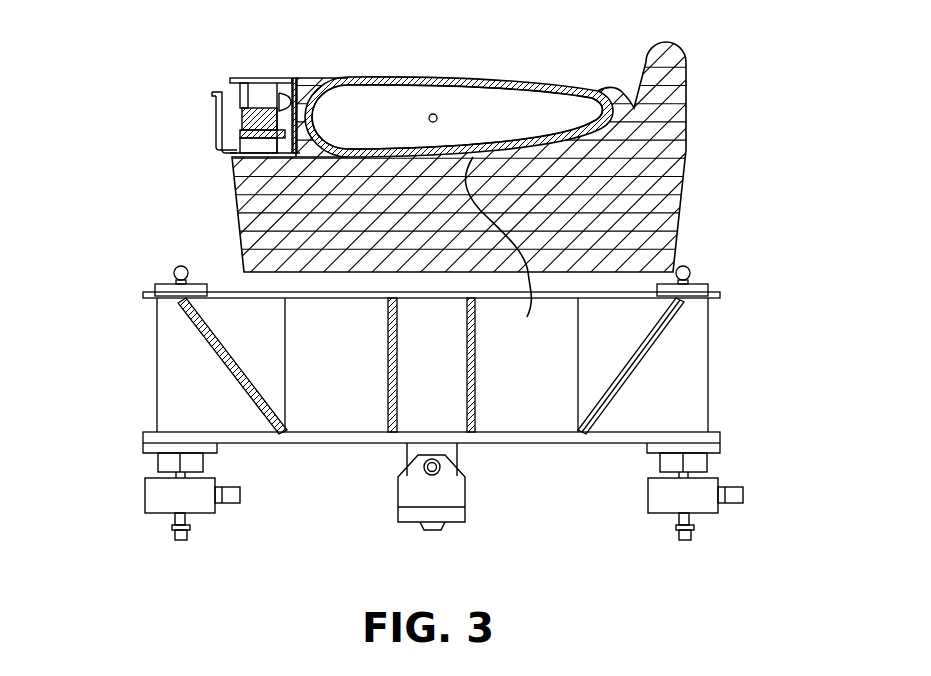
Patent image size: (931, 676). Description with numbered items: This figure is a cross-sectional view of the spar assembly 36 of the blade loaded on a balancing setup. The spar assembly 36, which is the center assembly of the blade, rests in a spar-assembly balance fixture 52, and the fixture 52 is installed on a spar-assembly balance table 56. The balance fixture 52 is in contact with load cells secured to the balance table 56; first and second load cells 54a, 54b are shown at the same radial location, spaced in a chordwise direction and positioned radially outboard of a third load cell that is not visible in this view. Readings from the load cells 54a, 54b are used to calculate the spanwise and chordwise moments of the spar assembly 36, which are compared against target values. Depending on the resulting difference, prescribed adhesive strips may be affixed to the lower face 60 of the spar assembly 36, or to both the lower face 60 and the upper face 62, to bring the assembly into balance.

The spar assembly 36 is at (413, 77).
The upper face 62 is at (490, 78).
The spar-assembly balance fixture 52 is at (254, 204).
The spar-assembly balance table 56 is at (143, 358).
The lower face 60 is at (501, 251).
The first load cell 54a is at (158, 492).
The second load cell 54b is at (700, 505).